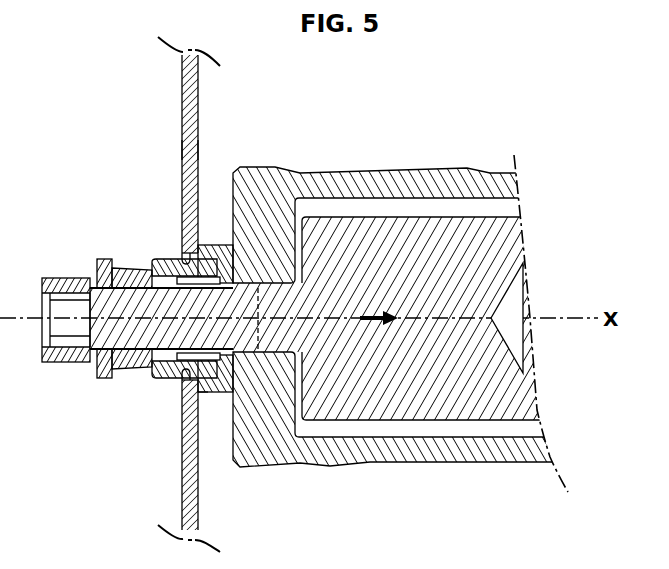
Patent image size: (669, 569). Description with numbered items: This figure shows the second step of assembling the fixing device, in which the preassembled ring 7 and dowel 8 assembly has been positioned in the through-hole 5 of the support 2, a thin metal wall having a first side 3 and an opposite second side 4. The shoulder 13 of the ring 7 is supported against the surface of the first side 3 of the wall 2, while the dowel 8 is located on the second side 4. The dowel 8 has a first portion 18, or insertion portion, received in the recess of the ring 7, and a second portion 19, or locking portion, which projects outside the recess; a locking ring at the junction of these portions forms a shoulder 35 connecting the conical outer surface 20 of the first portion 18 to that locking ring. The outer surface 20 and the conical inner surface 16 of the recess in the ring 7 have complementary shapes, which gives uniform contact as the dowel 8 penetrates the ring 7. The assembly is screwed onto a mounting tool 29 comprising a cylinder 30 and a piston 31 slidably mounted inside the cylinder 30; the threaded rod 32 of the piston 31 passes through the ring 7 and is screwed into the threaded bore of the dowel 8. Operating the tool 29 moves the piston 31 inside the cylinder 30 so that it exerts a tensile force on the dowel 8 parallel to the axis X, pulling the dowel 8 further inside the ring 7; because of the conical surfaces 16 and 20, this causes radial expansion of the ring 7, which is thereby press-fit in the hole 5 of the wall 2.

The support 2 is at (334, 294).
The first side 3 is at (198, 152).
The second side 4 is at (182, 151).
The through-hole 5 is at (182, 257).
The ring 7 is at (217, 240).
The dowel 8 is at (60, 366).
The shoulder 13 is at (182, 393).
The inner surface 16 is at (208, 393).
The first portion 18 is at (134, 277).
The second portion 19 is at (68, 319).
The outer surface 20 is at (174, 376).
The mounting tool 29 is at (334, 362).
The cylinder 30 is at (412, 182).
The piston 31 is at (507, 243).
The threaded rod 32 is at (123, 335).
The shoulder 35 is at (110, 260).